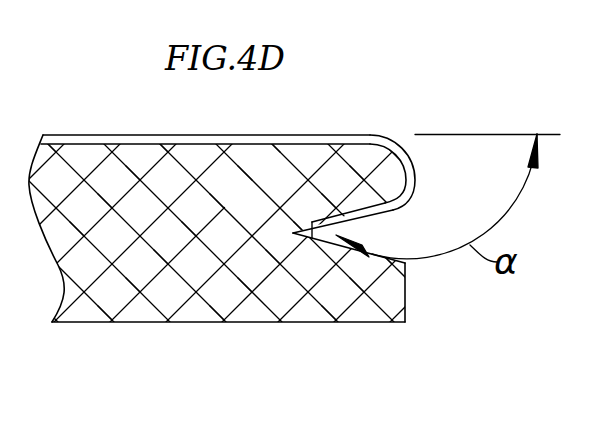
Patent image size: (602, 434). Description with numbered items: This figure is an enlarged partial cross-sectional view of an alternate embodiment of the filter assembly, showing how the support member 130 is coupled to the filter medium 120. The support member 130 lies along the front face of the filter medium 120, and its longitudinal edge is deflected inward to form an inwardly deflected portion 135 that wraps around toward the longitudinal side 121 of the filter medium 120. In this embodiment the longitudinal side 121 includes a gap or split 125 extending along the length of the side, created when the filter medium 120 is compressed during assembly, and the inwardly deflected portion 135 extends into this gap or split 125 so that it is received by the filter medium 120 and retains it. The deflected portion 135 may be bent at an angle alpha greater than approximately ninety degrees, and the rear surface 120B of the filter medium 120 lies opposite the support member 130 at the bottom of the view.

The filter medium 120 is at (242, 297).
The rear surface of the filter medium 120B is at (135, 323).
The longitudinal side of the filter medium 121 is at (406, 293).
The gap or split 125 is at (373, 236).
The support member 130 is at (270, 171).
The inwardly deflected portion 135 is at (407, 180).